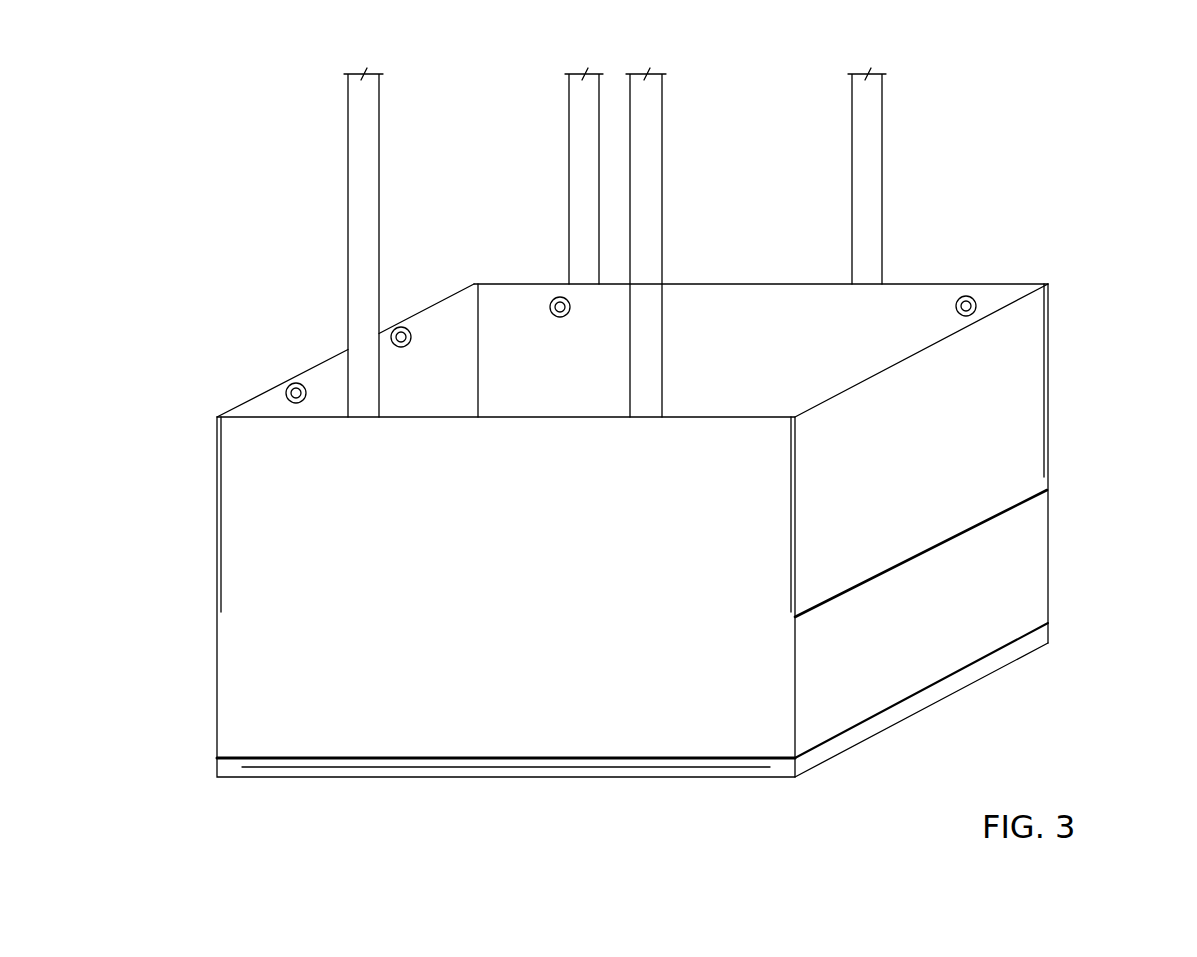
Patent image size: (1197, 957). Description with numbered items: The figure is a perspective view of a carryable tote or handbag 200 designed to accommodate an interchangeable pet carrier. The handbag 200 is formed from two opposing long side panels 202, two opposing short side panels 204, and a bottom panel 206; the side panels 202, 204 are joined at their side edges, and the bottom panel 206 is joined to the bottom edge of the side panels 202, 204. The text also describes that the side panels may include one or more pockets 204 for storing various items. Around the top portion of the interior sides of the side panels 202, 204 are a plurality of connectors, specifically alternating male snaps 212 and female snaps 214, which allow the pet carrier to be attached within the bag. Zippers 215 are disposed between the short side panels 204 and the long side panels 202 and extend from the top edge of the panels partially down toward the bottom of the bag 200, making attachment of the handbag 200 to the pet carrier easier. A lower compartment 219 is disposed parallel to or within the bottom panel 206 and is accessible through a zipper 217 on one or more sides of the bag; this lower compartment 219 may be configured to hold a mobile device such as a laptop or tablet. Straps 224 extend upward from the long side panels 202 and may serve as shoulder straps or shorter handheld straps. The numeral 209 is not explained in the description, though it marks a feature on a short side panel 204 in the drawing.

The handbag 200 is at (1093, 125).
The long side panel 202 is at (258, 706).
The short side panel 204 is at (445, 325).
The bottom panel 206 is at (750, 792).
The support rail 209 is at (962, 525).
The male snap 212 is at (401, 327).
The female snap 214 is at (296, 383).
The zipper 215 is at (217, 473).
The zipper 217 is at (352, 768).
The lower compartment 219 is at (622, 780).
The strap 224 is at (348, 211).